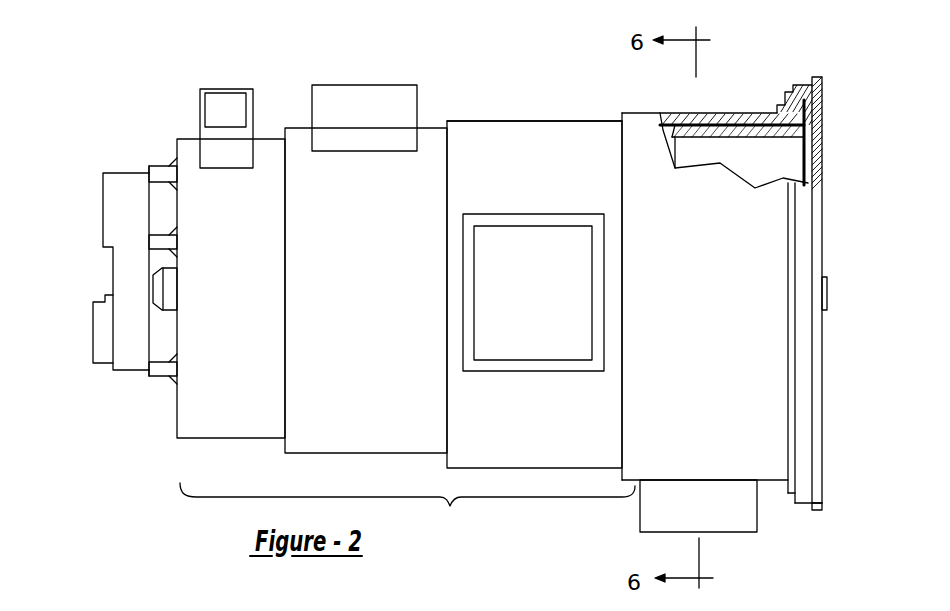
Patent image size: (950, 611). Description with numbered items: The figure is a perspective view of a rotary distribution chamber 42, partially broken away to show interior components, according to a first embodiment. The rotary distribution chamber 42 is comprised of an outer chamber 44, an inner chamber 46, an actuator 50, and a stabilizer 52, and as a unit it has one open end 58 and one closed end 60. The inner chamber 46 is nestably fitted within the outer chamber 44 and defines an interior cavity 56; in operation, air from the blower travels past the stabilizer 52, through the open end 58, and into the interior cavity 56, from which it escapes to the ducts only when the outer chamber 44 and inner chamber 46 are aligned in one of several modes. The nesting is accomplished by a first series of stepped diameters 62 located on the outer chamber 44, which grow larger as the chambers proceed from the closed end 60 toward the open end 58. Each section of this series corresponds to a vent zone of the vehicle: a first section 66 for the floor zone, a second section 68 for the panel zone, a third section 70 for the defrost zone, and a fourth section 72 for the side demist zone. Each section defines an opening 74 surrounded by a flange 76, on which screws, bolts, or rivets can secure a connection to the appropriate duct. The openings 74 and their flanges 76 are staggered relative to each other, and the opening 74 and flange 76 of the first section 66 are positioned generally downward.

The rotary distribution chamber 42 is at (212, 28).
The outer chamber 44 is at (516, 130).
The inner chamber 46 is at (735, 130).
The actuator 50 is at (117, 208).
The stabilizer 52 is at (823, 143).
The interior cavity 56 is at (786, 162).
The open end 58 is at (797, 378).
The closed end 60 is at (177, 405).
The first series of stepped diameters 62 is at (407, 509).
The first section 66 is at (772, 470).
The second section 68 is at (505, 463).
The third section 70 is at (385, 443).
The fourth section 72 is at (233, 427).
The opening 74 is at (561, 235).
The flange 76 is at (240, 90).